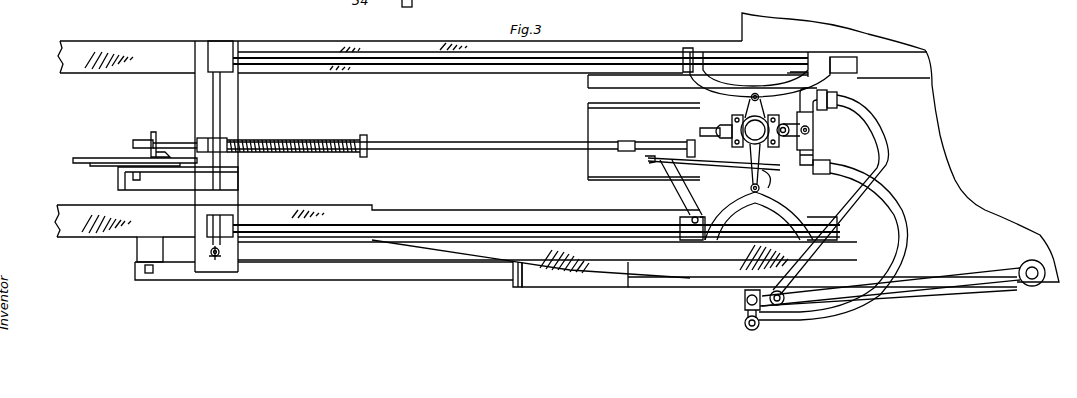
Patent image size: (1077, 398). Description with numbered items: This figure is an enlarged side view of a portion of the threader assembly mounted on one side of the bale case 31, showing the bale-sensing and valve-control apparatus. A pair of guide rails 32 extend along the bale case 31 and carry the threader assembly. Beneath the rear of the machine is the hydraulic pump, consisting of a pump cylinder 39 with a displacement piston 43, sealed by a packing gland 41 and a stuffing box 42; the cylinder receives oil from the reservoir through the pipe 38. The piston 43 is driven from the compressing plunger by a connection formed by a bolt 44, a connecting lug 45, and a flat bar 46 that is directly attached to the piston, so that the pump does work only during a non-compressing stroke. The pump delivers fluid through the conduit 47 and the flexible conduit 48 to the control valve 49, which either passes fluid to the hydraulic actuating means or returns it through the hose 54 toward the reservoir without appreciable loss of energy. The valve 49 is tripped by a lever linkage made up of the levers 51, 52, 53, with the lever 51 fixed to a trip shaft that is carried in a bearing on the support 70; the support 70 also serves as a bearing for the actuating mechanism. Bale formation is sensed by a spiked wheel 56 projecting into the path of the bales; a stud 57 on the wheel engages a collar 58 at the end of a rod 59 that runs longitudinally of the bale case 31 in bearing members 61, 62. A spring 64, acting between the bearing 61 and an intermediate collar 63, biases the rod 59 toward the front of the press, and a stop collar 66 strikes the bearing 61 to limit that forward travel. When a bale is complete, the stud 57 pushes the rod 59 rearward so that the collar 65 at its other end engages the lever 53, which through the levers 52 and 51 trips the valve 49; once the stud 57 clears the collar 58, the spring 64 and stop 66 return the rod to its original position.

The bale case 31 is at (143, 48).
The guide rails 32 is at (265, 84).
The pipe 38 is at (684, 238).
The pump cylinder 39 is at (678, 282).
The packing gland 41 is at (514, 283).
The stuffing box 42 is at (584, 280).
The displacement piston 43 is at (271, 280).
The bolt 44 is at (149, 273).
The connecting lug 45 is at (140, 249).
The flat bar 46 is at (274, 248).
The conduit 47 is at (898, 282).
The flexible conduit 48 is at (888, 150).
The control valve 49 is at (818, 140).
The lever 51 is at (768, 172).
The lever 52 is at (695, 160).
The lever 53 is at (646, 158).
The hose 54 is at (898, 200).
The spiked wheel 56 is at (83, 158).
The stud 57 is at (172, 148).
The collar 58 is at (153, 132).
The rod 59 is at (136, 143).
The bearing member 61 is at (227, 145).
The bearing member 62 is at (628, 141).
The collar 63 is at (365, 140).
The spring 64 is at (318, 140).
The collar 65 is at (688, 139).
The stop collar 66 is at (208, 138).
The support 70 is at (748, 110).